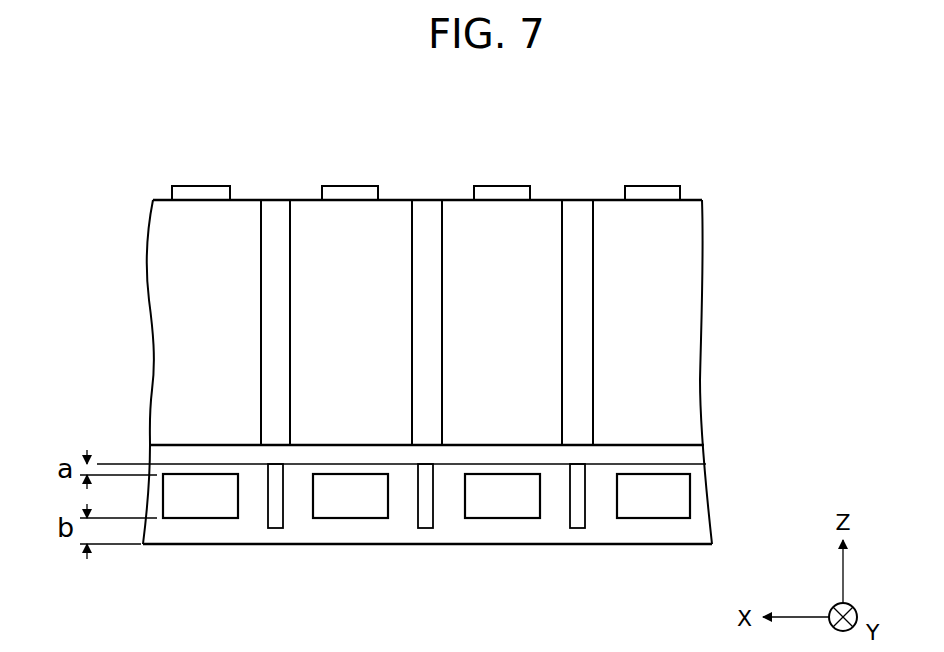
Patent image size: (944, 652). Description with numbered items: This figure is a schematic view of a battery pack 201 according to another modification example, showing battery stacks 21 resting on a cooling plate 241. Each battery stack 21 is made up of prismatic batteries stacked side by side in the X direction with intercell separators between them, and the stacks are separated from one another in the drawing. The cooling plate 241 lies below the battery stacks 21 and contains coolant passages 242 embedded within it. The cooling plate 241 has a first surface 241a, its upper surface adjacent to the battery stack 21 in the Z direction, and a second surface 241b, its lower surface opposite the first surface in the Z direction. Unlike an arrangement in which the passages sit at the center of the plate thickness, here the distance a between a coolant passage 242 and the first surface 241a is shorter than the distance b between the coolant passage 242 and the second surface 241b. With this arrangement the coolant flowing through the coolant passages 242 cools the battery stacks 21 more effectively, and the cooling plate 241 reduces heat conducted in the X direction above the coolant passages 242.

The battery stack 21 is at (553, 196).
The battery pack 201 is at (491, 167).
The cooling plate 241 is at (486, 547).
The first surface 241a is at (230, 462).
The second surface 241b is at (343, 545).
The coolant passage 242 is at (200, 475).